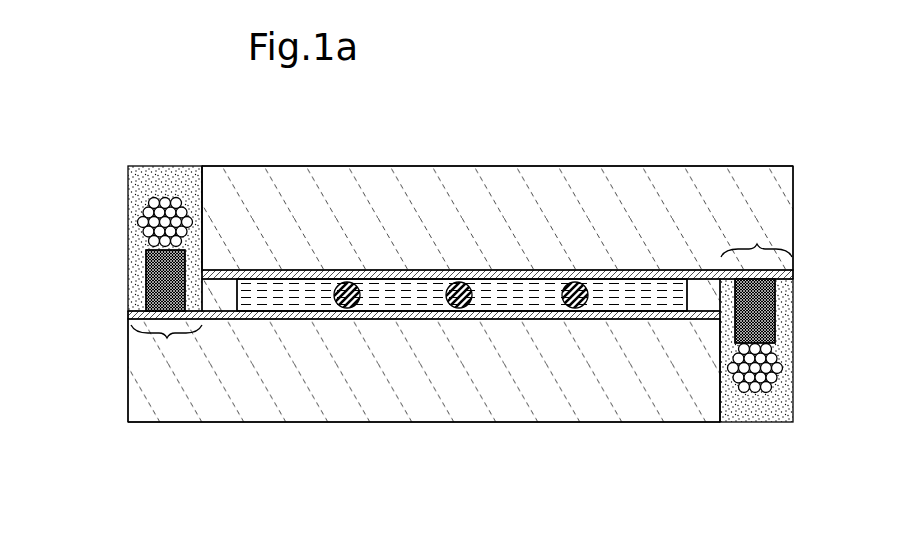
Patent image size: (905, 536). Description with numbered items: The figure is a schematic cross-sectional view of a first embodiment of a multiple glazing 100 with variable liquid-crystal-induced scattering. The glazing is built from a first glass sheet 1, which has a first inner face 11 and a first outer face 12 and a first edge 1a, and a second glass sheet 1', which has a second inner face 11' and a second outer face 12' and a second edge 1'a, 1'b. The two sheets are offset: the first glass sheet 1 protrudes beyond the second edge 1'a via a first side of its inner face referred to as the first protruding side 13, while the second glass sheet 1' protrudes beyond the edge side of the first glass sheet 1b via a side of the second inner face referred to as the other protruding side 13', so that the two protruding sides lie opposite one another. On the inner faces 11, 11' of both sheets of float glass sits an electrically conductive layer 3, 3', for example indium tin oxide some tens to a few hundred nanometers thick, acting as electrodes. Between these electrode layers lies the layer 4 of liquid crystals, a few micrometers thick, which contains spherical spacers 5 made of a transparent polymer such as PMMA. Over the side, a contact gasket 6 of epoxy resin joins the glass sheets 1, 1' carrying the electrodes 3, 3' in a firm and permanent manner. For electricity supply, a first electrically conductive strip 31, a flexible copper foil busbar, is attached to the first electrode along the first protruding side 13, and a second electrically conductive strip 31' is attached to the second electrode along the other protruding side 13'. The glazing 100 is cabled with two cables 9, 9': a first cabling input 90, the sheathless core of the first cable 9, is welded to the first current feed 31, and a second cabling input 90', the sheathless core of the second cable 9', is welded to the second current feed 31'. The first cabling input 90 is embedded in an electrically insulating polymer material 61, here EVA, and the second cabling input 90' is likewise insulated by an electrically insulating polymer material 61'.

The glazing 100 is at (676, 113).
The first glass sheet 1 is at (424, 370).
The second glass sheet 1' is at (497, 218).
The first edge 1a is at (128, 386).
The edge side of the first glass sheet 1b is at (722, 398).
The second edge 1'a is at (185, 193).
The second edge 1'b is at (834, 222).
The electrically conductive layer 3 is at (424, 354).
The electrically conductive layer 3' is at (497, 237).
The layer of liquid crystals 4 is at (513, 292).
The spherical spacers 5 is at (458, 282).
The contact gasket 6 is at (223, 311).
The first cable 9 is at (132, 226).
The second cable 9' is at (789, 365).
The first inner face 11 is at (462, 352).
The second inner face 11' is at (462, 250).
The first outer face 12 is at (424, 459).
The second outer face 12' is at (497, 131).
The first protruding side 13 is at (166, 348).
The other protruding side 13' is at (756, 237).
The first electrically conductive strip 31 is at (131, 285).
The second electrically conductive strip 31' is at (793, 306).
The electrically insulating polymer material 61 is at (140, 238).
The electrically insulating polymer material 61' is at (786, 357).
The first cabling input 90 is at (128, 280).
The second cabling input 90' is at (795, 312).